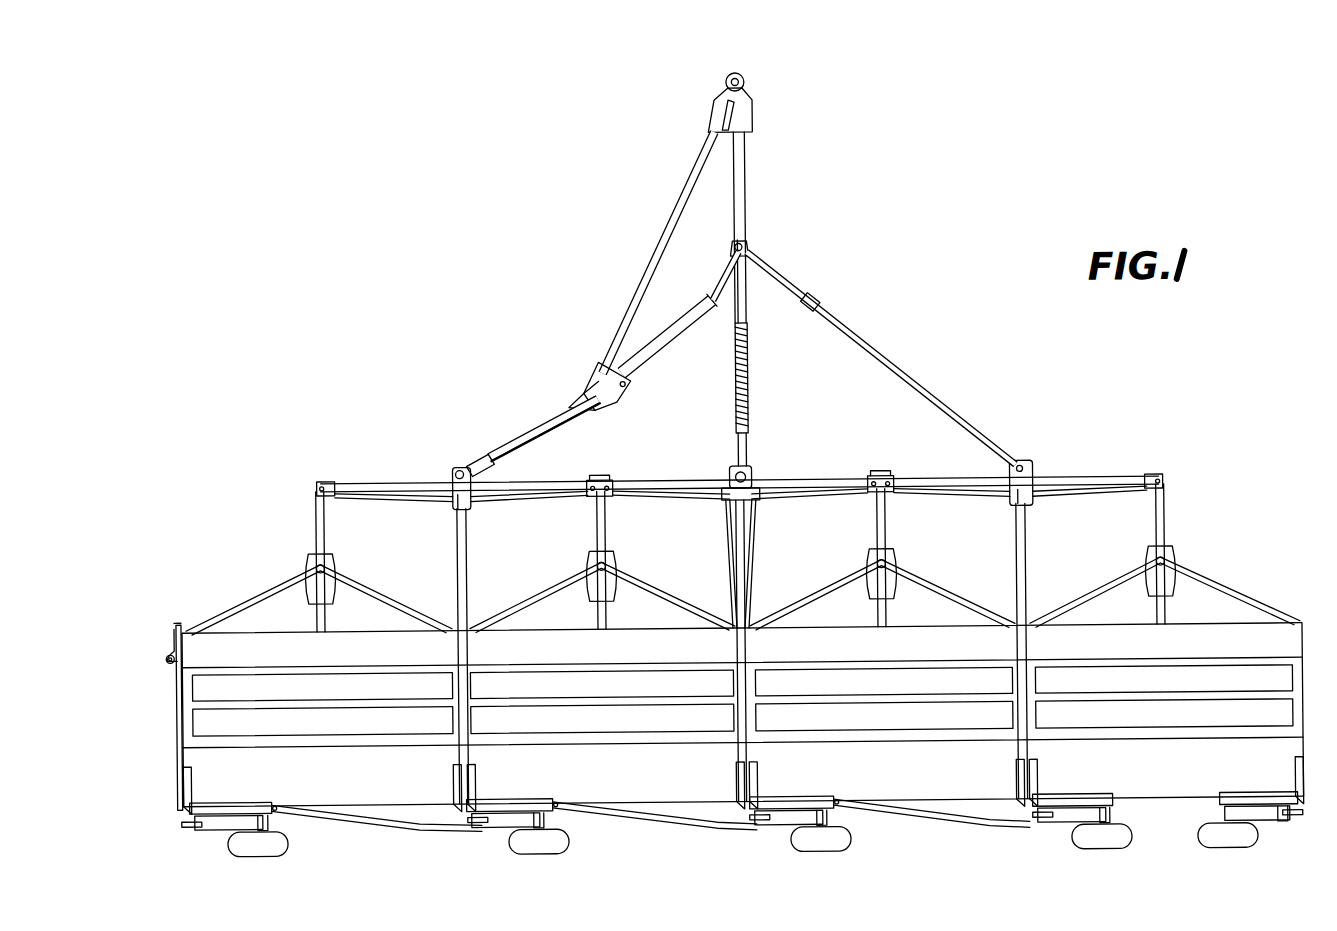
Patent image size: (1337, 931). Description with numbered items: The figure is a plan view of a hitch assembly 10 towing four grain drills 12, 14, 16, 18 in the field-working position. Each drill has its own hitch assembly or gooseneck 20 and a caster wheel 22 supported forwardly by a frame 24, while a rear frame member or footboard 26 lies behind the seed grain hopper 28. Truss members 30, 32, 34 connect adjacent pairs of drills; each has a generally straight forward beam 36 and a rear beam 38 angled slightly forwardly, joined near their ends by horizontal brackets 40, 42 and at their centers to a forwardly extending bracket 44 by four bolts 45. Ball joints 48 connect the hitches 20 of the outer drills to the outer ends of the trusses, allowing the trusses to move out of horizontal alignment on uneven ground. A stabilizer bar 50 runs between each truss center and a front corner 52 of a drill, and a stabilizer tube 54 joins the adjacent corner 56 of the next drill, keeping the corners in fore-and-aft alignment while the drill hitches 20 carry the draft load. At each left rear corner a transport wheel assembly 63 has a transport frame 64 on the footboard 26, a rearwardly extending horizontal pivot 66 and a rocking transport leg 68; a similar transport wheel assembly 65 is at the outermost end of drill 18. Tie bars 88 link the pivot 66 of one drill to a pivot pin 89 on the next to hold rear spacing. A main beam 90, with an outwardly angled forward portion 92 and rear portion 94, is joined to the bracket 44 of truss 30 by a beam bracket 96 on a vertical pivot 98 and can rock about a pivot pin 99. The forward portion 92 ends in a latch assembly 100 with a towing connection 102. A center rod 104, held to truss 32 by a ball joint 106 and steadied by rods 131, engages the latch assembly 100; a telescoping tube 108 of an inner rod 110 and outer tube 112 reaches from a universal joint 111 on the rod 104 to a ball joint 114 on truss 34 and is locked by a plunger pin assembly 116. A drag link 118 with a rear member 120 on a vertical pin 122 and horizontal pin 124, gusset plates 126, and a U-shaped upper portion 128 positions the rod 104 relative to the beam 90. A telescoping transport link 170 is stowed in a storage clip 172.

The hitch assembly 10 is at (476, 257).
The grain drill 12 is at (378, 638).
The grain drill 14 is at (572, 640).
The grain drill 16 is at (992, 642).
The grain drill 18 is at (1244, 637).
The hitch assembly or gooseneck 20 is at (318, 518).
The caster wheel 22 is at (309, 555).
The frame 24 is at (381, 584).
The rear frame member or footboard 26 is at (206, 756).
The seed grain hopper 28 is at (315, 727).
The truss member 30 is at (390, 467).
The truss member 32 is at (670, 469).
The truss member 34 is at (930, 476).
The forward beam 36 is at (529, 479).
The rear beam 38 is at (551, 498).
The horizontal bracket 40 is at (330, 472).
The horizontal bracket 42 is at (618, 476).
The forwardly extending bracket 44 is at (452, 469).
The bolt 45 is at (456, 494).
The ball joint 48 is at (321, 480).
The stabilizer bar 50 is at (469, 558).
The front corner 52 is at (468, 639).
The stabilizer tube 54 is at (459, 537).
The adjacent corner 56 is at (454, 636).
The transport wheel assembly 63 is at (257, 865).
The transport frame 64 is at (262, 801).
The transport wheel assembly 65 is at (1244, 863).
The horizontal pivot 66 is at (196, 822).
The transport leg 68 is at (210, 821).
The tie bar 88 is at (380, 817).
The pivot pin 89 is at (276, 810).
The main beam 90 is at (608, 328).
The forward portion 92 is at (668, 225).
The rear portion 94 is at (515, 416).
The beam bracket 96 is at (470, 446).
The vertical pivot 98 is at (460, 463).
The pivot pin 99 is at (486, 460).
The latch assembly 100 is at (760, 101).
The connection 102 is at (748, 80).
The center rod 104 is at (751, 176).
The ball joint 106 is at (735, 476).
The telescoping tube 108 is at (883, 342).
The inner rod 110 is at (794, 273).
The universal joint 111 is at (756, 255).
The outer tube 112 is at (926, 390).
The ball joint 114 is at (1024, 469).
The plunger pin assembly 116 is at (817, 301).
The drag link 118 is at (698, 320).
The rear member 120 is at (627, 325).
The vertical pin 122 is at (590, 378).
The horizontal pin 124 is at (622, 387).
The horizontal plates 126 is at (584, 394).
The upper portion 128 is at (683, 300).
The rod 131 is at (755, 525).
The telescoping transport link 170 is at (173, 688).
The storage clip 172 is at (168, 642).